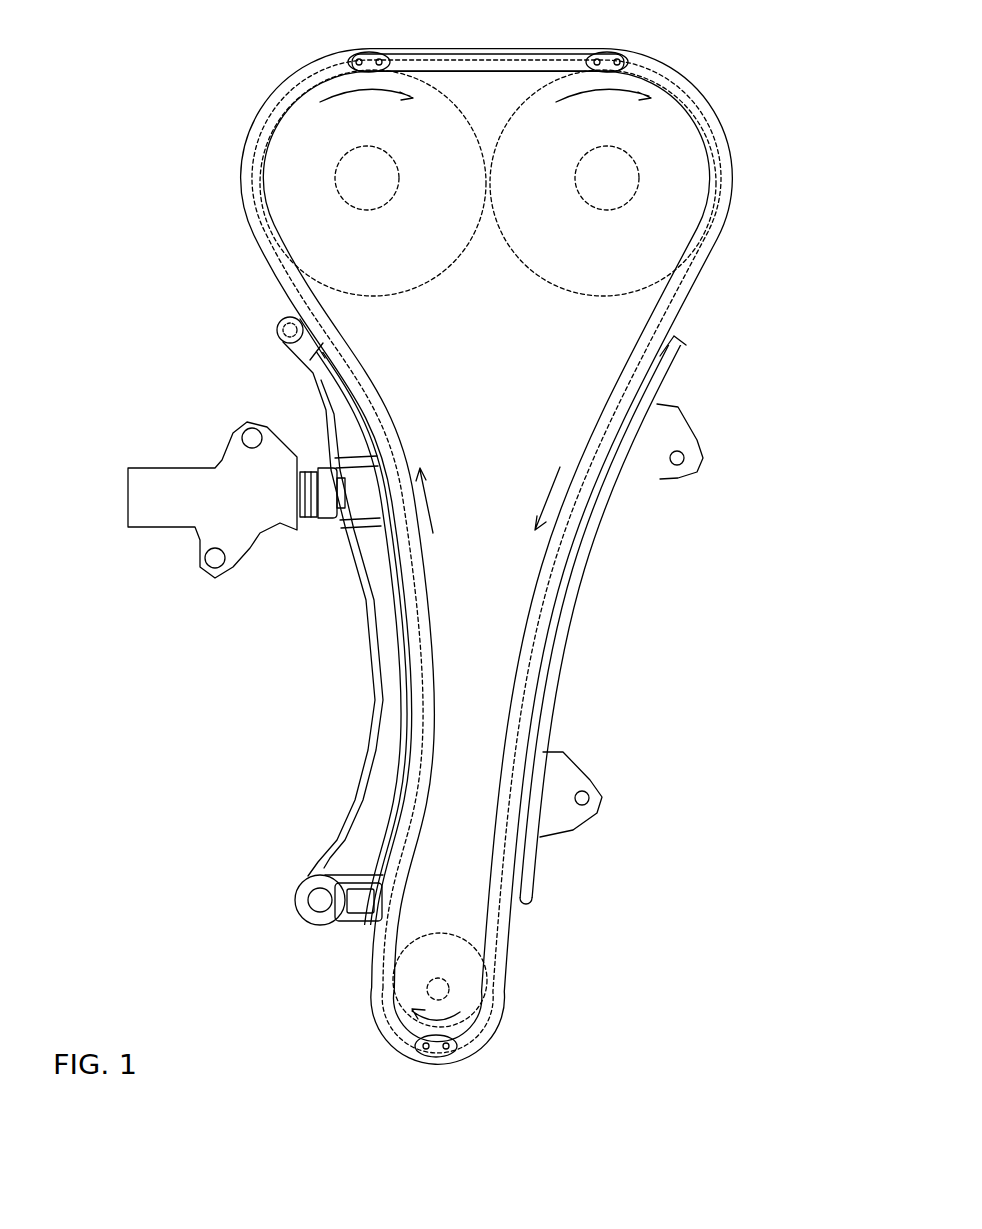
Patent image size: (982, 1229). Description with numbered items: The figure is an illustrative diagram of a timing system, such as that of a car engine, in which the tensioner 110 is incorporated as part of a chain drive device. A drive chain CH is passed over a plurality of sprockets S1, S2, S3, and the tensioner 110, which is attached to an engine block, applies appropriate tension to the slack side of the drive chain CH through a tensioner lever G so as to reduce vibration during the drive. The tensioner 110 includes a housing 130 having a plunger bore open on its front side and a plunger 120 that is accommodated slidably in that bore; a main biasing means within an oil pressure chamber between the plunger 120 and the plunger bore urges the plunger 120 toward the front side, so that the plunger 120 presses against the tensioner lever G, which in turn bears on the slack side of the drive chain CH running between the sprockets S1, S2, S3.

The tensioner 110 is at (212, 502).
The plunger 120 is at (308, 518).
The housing 130 is at (238, 425).
The tensioner lever G is at (340, 798).
The sprocket S1 is at (470, 983).
The sprocket S2 is at (265, 183).
The sprocket S3 is at (683, 162).
The drive chain CH is at (687, 297).